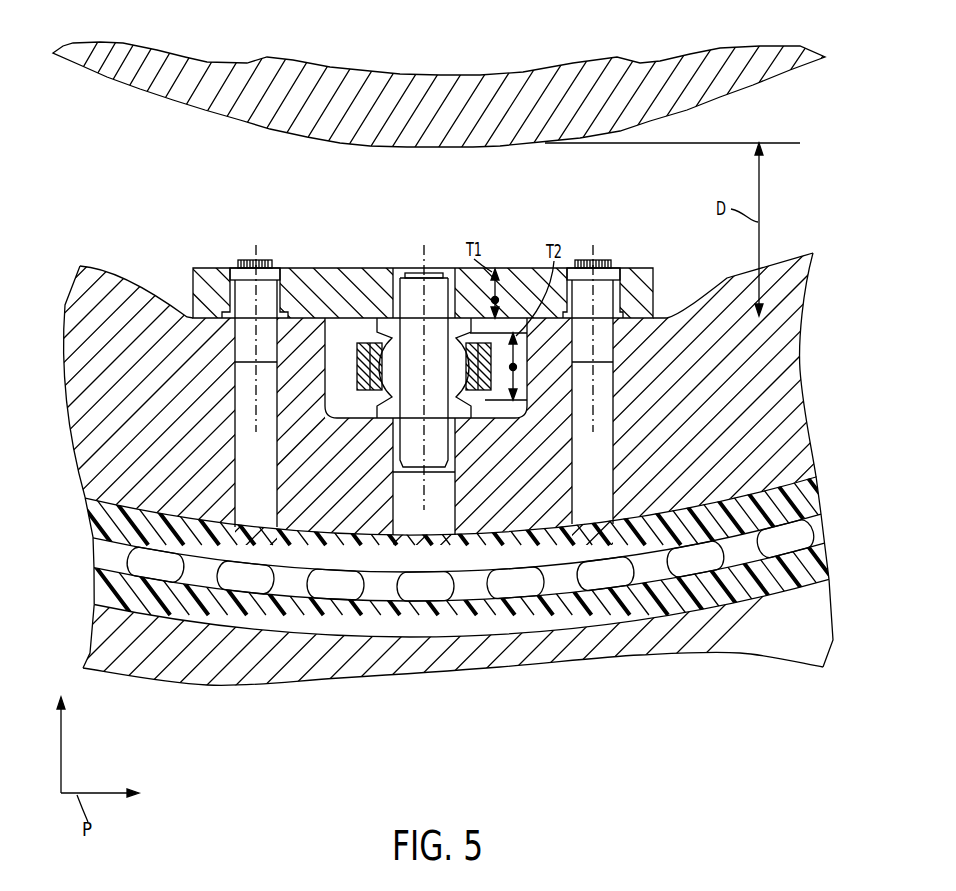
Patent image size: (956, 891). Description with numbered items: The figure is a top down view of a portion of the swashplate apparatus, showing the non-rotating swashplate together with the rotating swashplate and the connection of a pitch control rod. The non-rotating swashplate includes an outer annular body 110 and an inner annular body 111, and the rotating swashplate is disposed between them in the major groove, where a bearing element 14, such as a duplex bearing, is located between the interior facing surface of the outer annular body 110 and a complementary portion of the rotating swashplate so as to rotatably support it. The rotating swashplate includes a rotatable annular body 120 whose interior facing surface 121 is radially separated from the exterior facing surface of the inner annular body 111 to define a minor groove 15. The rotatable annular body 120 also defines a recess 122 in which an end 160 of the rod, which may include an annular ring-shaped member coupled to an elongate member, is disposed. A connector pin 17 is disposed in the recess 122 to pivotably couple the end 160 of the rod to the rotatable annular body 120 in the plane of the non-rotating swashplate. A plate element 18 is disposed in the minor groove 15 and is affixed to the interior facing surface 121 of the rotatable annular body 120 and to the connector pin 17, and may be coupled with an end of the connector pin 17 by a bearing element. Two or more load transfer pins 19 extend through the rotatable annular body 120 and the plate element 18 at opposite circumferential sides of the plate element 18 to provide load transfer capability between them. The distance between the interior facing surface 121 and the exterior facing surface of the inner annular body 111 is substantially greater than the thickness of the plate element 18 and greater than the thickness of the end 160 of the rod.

The inner annular body 111 is at (165, 62).
The outer annular body 110 is at (670, 642).
The rotatable annular body 120 is at (790, 385).
The interior facing surface 121 is at (777, 266).
The recess 122 is at (351, 349).
The bearing element 14 is at (807, 505).
The minor groove 15 is at (620, 208).
The connector pin 17 is at (437, 432).
The plate element 18 is at (322, 280).
The load transfer pins 19 is at (243, 327).
The end of the rod 160 is at (392, 396).